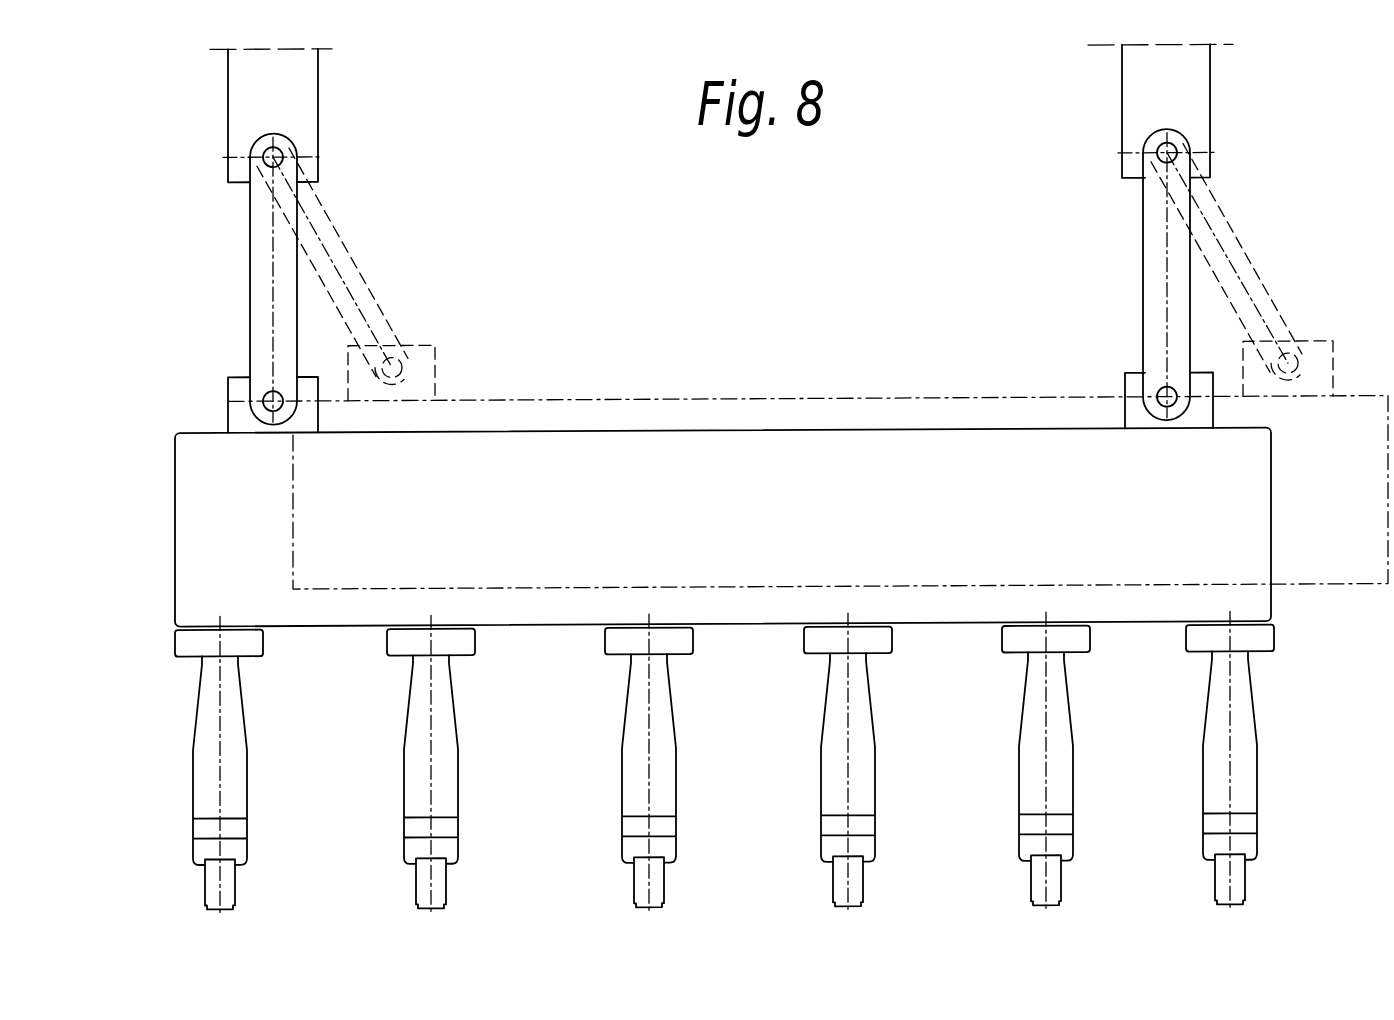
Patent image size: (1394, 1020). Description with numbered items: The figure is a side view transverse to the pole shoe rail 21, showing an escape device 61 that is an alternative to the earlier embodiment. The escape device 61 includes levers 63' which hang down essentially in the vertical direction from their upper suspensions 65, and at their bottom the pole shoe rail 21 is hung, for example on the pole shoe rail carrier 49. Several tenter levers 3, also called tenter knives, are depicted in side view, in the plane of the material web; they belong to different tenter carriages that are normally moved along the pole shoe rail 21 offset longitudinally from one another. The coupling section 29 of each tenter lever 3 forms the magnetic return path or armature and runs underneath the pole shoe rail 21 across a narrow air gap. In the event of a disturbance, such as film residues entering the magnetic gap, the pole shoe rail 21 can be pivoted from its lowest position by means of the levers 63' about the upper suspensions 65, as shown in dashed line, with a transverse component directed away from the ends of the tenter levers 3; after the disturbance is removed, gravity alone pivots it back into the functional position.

The tenter lever 3 is at (452, 762).
The pole shoe rail 21 is at (1288, 628).
The coupling section 29 is at (487, 635).
The pole shoe rail carrier 49 is at (211, 468).
The escape device 61 is at (1283, 222).
The lever 63' is at (686, 277).
The pivot pin 65 is at (284, 150).